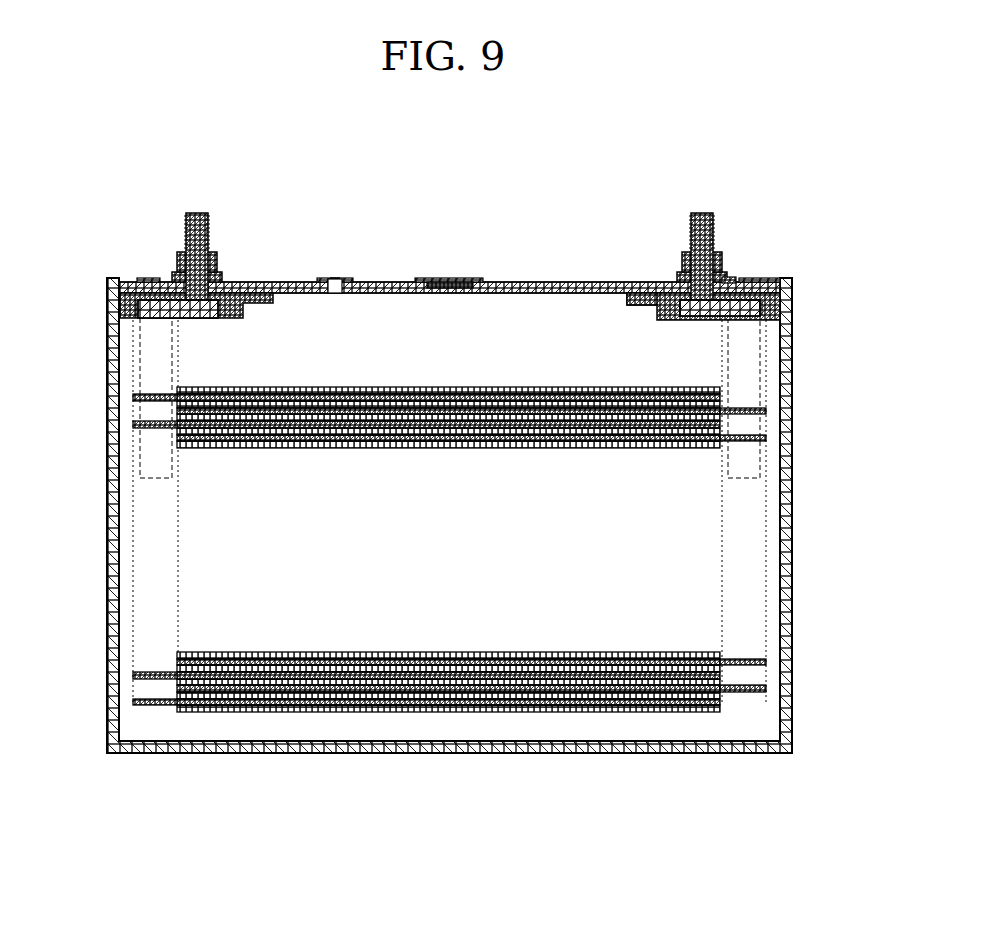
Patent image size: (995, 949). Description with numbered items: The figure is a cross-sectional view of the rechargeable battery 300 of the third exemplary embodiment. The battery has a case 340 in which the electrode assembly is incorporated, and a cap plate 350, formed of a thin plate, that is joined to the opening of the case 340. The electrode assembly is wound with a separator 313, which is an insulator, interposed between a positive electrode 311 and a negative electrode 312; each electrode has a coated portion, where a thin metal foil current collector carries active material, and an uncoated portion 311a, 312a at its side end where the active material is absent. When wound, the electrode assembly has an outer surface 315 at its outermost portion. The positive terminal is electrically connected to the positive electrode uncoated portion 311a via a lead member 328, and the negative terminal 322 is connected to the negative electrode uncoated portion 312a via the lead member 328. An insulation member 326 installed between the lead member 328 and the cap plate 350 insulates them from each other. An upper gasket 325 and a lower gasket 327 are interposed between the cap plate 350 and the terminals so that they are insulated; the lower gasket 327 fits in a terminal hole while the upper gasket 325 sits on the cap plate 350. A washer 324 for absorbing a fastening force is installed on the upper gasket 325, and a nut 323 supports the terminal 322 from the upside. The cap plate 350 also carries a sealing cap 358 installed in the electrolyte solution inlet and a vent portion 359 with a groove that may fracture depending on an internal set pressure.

The rechargeable battery 300 is at (428, 138).
The positive electrode 311 is at (263, 712).
The positive electrode uncoated portion 311a is at (155, 706).
The negative electrode 312 is at (318, 690).
The negative electrode uncoated portion 312a is at (742, 693).
The separator 313 is at (452, 681).
The outer surface 315 is at (449, 560).
The negative terminal 322 is at (690, 224).
The nut 323 is at (718, 253).
The washer 324 is at (678, 277).
The upper gasket 325 is at (730, 278).
The insulation member 326 is at (782, 298).
The lower gasket 327 is at (655, 300).
The lead member 328 is at (133, 309).
The case 340 is at (792, 478).
The cap plate 350 is at (518, 281).
The sealing cap 358 is at (333, 279).
The vent portion 359 is at (457, 279).